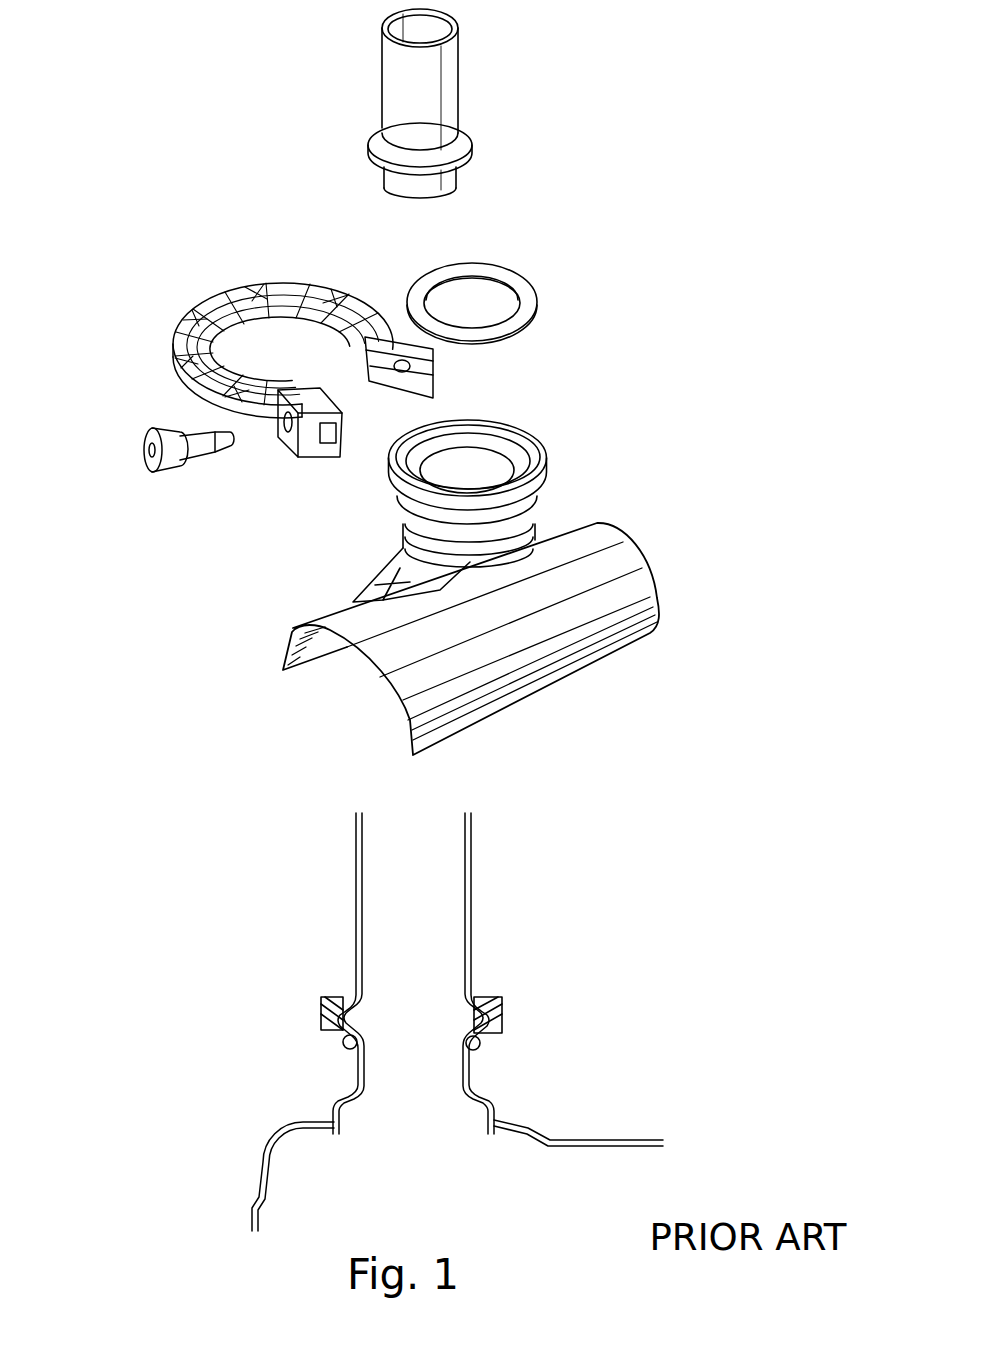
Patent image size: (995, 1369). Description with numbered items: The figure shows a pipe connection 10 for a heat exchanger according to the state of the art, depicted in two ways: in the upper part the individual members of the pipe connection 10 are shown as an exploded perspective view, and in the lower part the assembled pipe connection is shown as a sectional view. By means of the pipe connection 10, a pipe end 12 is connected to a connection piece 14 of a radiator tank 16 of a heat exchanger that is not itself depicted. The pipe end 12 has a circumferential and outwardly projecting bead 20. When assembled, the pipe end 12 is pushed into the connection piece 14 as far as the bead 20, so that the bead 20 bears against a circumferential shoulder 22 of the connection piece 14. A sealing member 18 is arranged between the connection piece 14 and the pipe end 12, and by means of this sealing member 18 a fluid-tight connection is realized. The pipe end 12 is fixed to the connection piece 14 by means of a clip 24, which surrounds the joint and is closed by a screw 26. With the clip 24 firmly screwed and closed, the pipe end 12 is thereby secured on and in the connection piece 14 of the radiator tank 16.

The pipe connection 10 is at (561, 947).
The pipe end 12 is at (518, 116).
The connection piece 14 is at (340, 521).
The radiator tank 16 is at (598, 552).
The sealing member 18 is at (518, 290).
The bead 20 is at (468, 146).
The circumferential shoulder 22 is at (546, 452).
The clip 24 is at (257, 272).
The screw 26 is at (187, 463).